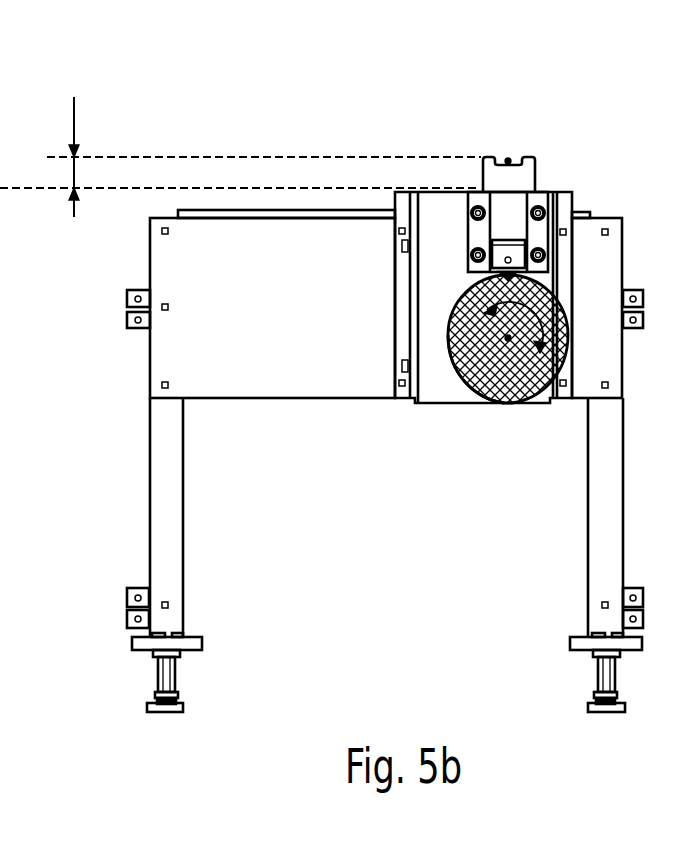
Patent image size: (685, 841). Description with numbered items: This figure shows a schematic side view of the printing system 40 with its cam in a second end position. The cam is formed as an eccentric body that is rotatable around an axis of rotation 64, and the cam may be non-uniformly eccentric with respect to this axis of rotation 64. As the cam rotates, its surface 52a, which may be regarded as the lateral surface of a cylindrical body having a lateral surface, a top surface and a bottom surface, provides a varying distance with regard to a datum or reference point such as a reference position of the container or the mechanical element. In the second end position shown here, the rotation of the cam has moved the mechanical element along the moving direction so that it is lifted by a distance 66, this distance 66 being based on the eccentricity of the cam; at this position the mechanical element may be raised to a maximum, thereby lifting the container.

The printing system 40 is at (291, 122).
The distance 66 is at (74, 128).
The surface 52a is at (458, 382).
The axis of rotation 64 is at (509, 341).